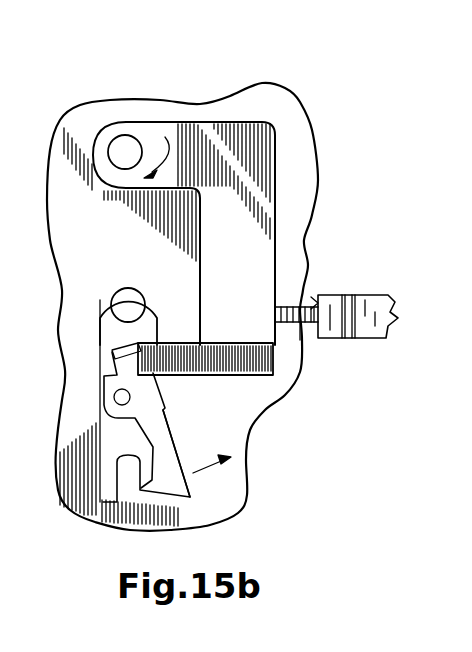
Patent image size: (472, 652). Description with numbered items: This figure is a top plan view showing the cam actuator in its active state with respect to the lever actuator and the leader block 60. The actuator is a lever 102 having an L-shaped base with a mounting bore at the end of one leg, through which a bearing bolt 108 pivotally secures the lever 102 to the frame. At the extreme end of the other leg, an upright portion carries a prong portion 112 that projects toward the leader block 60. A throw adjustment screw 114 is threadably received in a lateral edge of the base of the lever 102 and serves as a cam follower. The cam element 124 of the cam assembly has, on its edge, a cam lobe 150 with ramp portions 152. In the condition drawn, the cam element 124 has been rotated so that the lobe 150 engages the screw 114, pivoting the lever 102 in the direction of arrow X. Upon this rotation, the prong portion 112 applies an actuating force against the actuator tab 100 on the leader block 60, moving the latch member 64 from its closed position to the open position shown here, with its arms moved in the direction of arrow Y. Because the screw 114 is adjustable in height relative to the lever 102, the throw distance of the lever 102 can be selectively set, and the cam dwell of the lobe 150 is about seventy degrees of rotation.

The leader block 60 is at (101, 386).
The latch member 64 is at (177, 435).
The actuator tab 100 is at (133, 348).
The lever 102 is at (259, 278).
The bearing bolt 108 is at (124, 148).
The prong portion 112 is at (183, 362).
The throw adjustment screw 114 is at (303, 345).
The cam element 124 is at (357, 303).
The cam lobe 150 is at (310, 300).
The ramp portions 152 is at (318, 343).